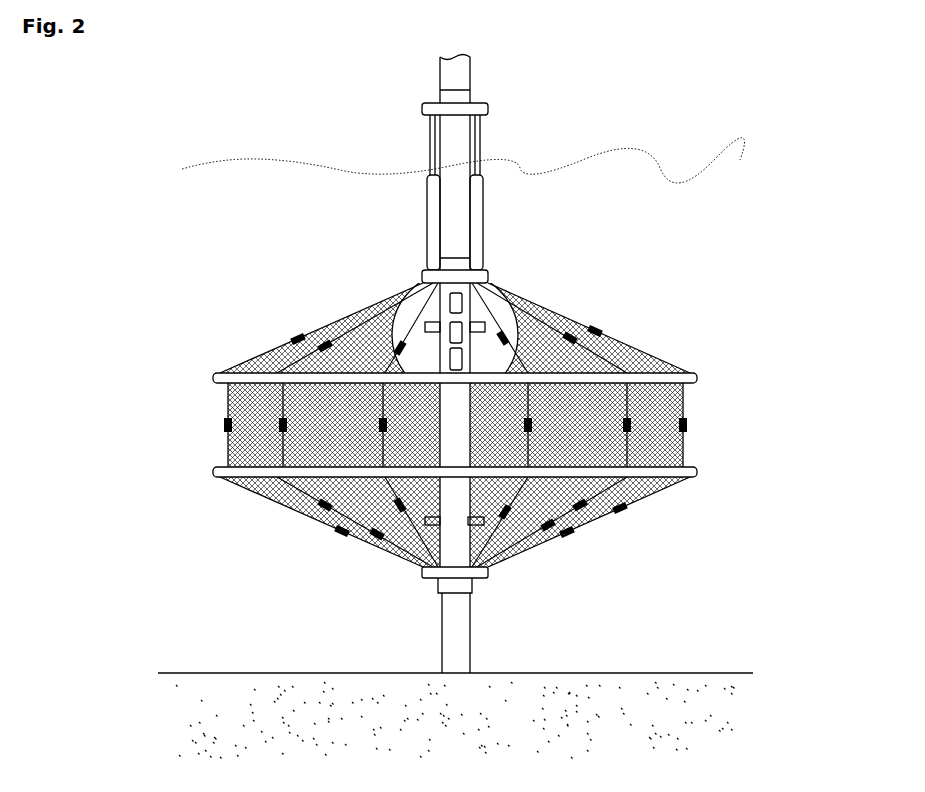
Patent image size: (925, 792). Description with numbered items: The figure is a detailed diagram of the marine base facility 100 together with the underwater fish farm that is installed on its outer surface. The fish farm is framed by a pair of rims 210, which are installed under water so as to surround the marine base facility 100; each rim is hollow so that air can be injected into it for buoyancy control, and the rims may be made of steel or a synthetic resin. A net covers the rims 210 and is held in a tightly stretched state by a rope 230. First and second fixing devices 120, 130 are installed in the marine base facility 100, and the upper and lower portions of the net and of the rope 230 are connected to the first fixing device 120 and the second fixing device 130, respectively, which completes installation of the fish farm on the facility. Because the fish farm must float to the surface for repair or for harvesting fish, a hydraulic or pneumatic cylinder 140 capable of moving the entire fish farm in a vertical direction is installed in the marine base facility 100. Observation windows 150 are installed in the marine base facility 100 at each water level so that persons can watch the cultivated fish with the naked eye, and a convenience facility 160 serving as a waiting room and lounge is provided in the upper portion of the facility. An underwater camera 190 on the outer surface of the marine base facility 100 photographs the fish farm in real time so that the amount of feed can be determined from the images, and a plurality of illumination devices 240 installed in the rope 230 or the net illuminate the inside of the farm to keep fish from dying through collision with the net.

The marine base facility 100 is at (465, 652).
The first fixing device 120 is at (420, 277).
The second fixing device 130 is at (478, 579).
The hydraulic or pneumatic cylinder 140 is at (483, 213).
The observation window 150 is at (482, 296).
The convenience facility 160 is at (405, 310).
The underwater camera 190 is at (368, 538).
The rim 210 is at (698, 378).
The rope 230 is at (623, 343).
The illumination device 240 is at (296, 338).